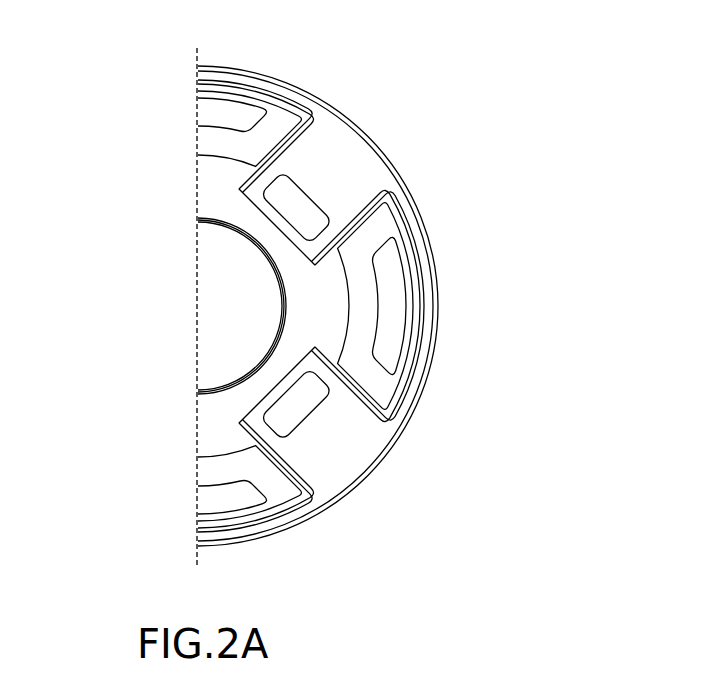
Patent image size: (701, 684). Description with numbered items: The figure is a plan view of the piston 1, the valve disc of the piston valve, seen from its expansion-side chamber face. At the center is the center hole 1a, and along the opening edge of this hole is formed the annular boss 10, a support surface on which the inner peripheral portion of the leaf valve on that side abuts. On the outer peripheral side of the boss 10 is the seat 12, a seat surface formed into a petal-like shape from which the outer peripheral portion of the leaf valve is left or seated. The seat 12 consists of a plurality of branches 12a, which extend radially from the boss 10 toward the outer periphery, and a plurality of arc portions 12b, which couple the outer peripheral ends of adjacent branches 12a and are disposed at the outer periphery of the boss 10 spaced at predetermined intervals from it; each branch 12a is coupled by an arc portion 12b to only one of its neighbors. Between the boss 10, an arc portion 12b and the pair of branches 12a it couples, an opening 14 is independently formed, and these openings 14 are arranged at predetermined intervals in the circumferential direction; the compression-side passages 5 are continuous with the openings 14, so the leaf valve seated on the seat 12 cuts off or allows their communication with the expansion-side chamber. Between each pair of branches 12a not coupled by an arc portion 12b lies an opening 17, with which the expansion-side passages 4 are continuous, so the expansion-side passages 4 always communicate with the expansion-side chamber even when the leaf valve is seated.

The piston 1 is at (421, 156).
The center hole 1a is at (223, 228).
The annular boss 10 is at (275, 248).
The seat 12 is at (359, 307).
The branches 12a is at (302, 138).
The arc portions 12b is at (238, 66).
The compression-side passages 5 is at (210, 103).
The openings 14 is at (210, 138).
The openings 17 is at (341, 147).
The expansion-side passages 4 is at (300, 212).